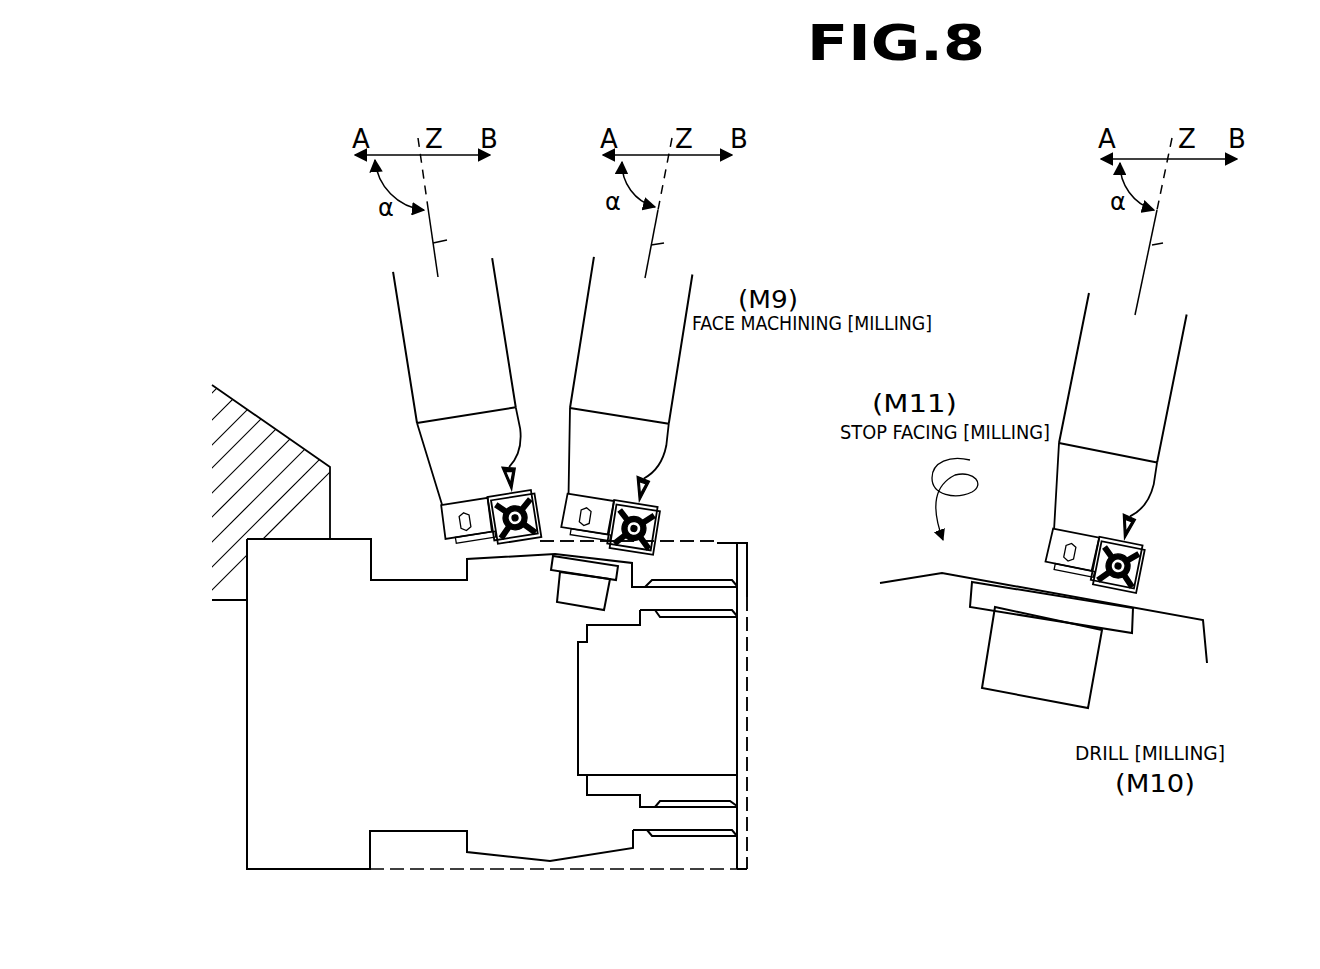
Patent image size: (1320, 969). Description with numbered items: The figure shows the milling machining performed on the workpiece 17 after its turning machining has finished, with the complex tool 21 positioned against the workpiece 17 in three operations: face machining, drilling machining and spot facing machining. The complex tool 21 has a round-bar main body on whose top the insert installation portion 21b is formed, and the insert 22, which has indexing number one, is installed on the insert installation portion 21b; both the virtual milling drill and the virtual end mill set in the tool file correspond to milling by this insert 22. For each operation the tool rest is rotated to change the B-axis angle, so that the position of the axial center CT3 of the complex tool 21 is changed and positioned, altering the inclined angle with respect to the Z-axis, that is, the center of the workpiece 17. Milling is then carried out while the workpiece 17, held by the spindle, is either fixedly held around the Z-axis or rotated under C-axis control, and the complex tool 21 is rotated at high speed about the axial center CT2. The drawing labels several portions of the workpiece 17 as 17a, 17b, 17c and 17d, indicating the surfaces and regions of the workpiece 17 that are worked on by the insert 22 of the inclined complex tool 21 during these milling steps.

The workpiece 17 is at (260, 807).
The inner surface of workpiece 17a is at (720, 775).
The end face of workpiece 17b is at (747, 597).
The outer surface of workpiece 17c is at (708, 542).
The inner surface of workpiece 17d is at (716, 779).
The complex tool 21 is at (498, 292).
The insert installation portion 21b is at (425, 452).
The insert 22 is at (540, 475).
The axial center CT2 is at (867, 226).
The axial center of the main body CT3 is at (447, 240).